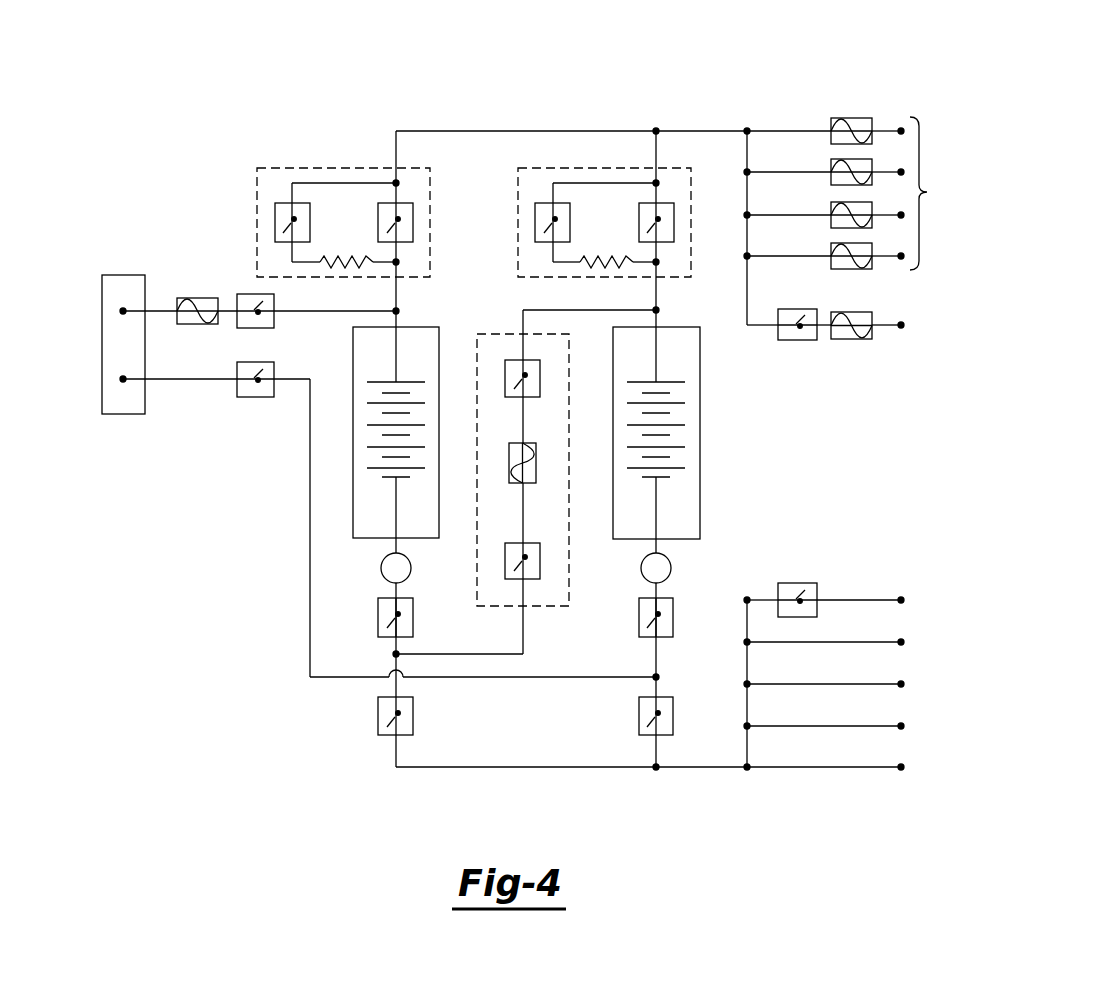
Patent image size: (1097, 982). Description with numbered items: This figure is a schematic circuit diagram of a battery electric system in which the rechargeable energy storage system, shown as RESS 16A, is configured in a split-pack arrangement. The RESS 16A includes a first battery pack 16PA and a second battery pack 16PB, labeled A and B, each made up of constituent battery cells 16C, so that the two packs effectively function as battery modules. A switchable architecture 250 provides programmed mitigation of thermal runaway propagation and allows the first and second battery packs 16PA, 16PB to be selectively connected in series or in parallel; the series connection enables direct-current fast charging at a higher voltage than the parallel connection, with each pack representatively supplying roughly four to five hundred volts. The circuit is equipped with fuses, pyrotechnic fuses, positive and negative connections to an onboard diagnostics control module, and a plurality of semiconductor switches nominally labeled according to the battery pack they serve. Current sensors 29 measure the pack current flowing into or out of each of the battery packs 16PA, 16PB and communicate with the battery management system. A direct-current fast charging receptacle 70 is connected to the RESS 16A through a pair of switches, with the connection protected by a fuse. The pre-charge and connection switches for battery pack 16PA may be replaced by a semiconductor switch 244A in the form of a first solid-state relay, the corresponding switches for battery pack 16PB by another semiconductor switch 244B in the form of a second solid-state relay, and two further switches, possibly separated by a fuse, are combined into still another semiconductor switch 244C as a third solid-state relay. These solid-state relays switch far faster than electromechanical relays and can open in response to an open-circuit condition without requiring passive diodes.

The RESS 16A is at (502, 390).
The switchable architecture 250 is at (351, 419).
The semiconductor switch 244A is at (278, 167).
The semiconductor switch 244B is at (538, 167).
The semiconductor switch 244C is at (537, 607).
The DCFC receptacle 70 is at (101, 330).
The first battery pack 16PA is at (418, 327).
The second battery pack 16PB is at (700, 432).
The battery cells 16C is at (388, 382).
The current sensors 29 is at (412, 568).